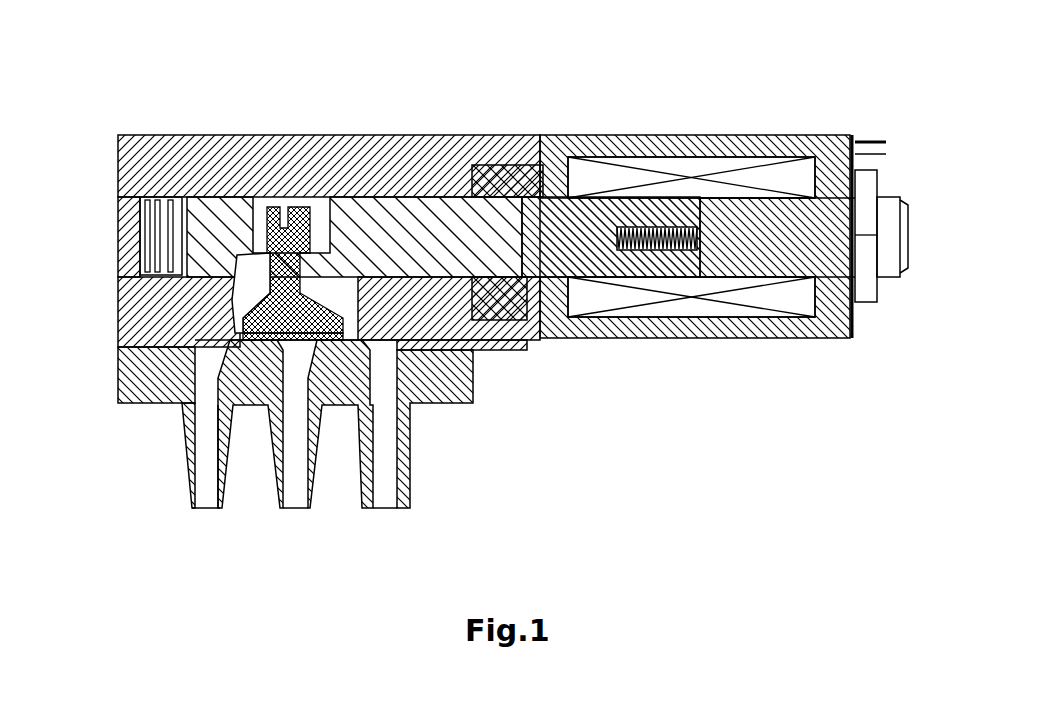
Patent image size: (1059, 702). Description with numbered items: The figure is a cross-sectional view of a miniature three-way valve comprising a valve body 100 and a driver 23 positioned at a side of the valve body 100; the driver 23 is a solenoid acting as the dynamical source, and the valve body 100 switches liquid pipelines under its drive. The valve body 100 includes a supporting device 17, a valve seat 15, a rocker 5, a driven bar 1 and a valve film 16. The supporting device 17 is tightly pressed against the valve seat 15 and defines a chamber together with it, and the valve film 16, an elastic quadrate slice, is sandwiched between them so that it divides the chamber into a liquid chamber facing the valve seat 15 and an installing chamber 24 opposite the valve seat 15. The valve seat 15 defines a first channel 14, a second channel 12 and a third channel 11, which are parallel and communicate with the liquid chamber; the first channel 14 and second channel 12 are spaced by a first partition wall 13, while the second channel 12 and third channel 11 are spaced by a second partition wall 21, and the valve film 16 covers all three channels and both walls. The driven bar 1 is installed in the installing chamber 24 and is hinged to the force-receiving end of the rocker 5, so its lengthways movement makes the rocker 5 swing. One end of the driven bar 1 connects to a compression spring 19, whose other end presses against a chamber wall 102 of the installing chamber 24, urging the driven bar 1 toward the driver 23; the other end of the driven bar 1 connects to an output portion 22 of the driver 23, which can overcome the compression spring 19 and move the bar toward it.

The driven bar 1 is at (415, 240).
The rocker 5 is at (255, 282).
The third channel 11 is at (388, 455).
The second channel 12 is at (283, 465).
The first partition wall 13 is at (223, 382).
The first channel 14 is at (214, 424).
The valve seat 15 is at (150, 377).
The valve film 16 is at (160, 360).
The supporting device 17 is at (358, 165).
The compression spring 19 is at (150, 236).
The second partition wall 21 is at (347, 405).
The output portion 22 is at (582, 233).
The driver 23 is at (665, 185).
The installing chamber 24 is at (266, 205).
The valve body 100 is at (477, 436).
The chamber wall 102 is at (127, 214).